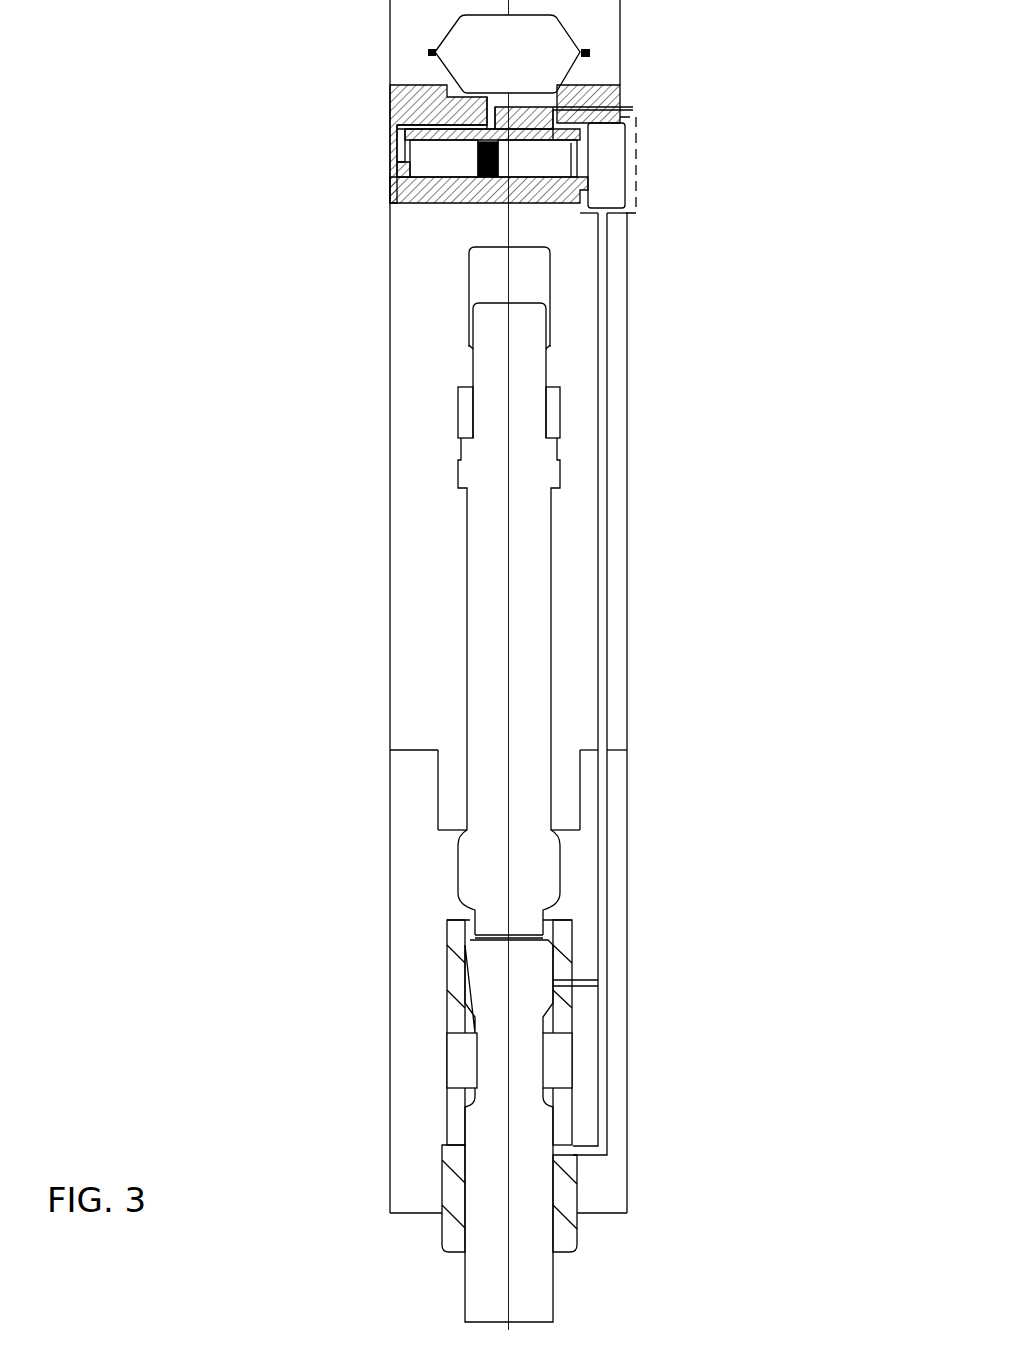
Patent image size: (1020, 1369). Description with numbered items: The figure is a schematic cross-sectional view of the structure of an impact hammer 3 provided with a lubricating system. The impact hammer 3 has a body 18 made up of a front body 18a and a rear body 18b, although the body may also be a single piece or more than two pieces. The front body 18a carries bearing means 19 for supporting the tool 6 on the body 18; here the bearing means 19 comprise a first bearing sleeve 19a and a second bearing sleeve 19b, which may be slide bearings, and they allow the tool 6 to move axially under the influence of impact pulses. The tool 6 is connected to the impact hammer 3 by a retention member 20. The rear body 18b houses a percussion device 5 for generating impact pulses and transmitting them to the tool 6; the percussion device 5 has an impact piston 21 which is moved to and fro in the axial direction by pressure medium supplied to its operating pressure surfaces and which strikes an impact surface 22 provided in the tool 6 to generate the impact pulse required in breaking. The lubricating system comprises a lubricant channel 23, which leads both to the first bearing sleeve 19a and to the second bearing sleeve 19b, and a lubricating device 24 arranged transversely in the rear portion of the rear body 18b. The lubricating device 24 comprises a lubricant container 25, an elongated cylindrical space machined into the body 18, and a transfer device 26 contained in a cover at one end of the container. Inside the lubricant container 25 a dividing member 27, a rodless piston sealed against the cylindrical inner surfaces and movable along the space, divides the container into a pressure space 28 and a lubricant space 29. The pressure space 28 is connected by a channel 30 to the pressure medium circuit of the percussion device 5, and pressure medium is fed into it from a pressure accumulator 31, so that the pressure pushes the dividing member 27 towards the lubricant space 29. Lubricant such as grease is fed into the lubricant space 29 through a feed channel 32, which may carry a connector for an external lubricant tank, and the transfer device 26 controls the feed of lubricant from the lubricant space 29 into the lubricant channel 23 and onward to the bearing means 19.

The impact hammer 3 is at (852, 366).
The percussion device 5 is at (443, 538).
The tool 6 is at (497, 1223).
The body 18 is at (336, 417).
The front body 18a is at (397, 842).
The rear body 18b is at (410, 342).
The bearing means 19 is at (409, 1086).
The first bearing sleeve 19a is at (455, 1168).
The second bearing sleeve 19b is at (457, 970).
The retention member 20 is at (455, 1060).
The impact piston 21 is at (547, 527).
The impact surface 22 is at (470, 920).
The lubricant channel 23 is at (601, 289).
The lubricating device 24 is at (564, 176).
The lubricant container 25 is at (400, 177).
The transfer device 26 is at (637, 177).
The dividing member 27 is at (480, 180).
The pressure space 28 is at (437, 177).
The lubricant space 29 is at (538, 177).
The channel 30 is at (396, 131).
The pressure accumulator 31 is at (496, 65).
The feed channel 32 is at (620, 100).